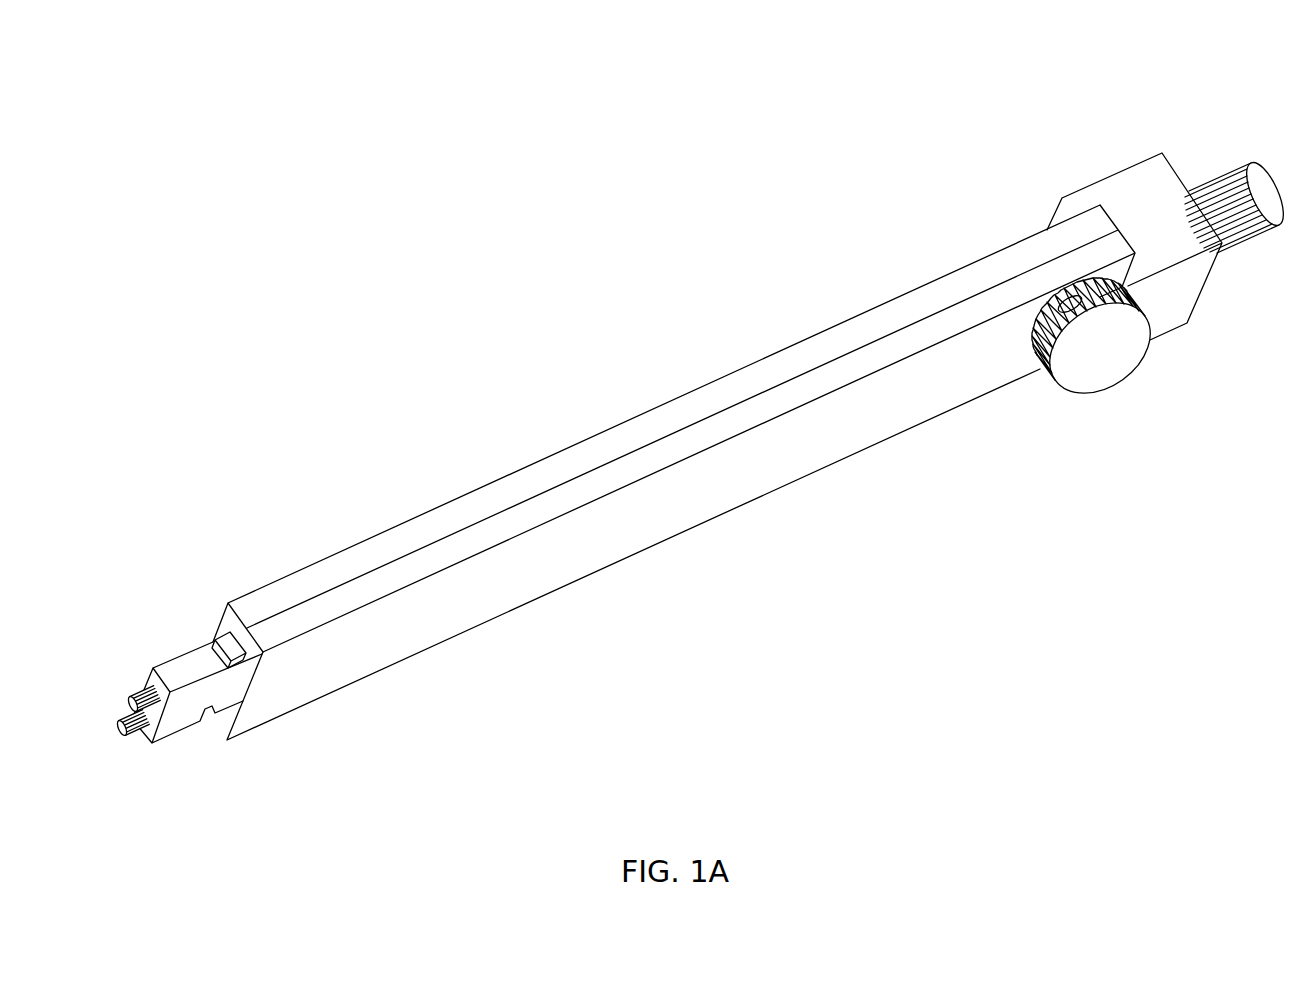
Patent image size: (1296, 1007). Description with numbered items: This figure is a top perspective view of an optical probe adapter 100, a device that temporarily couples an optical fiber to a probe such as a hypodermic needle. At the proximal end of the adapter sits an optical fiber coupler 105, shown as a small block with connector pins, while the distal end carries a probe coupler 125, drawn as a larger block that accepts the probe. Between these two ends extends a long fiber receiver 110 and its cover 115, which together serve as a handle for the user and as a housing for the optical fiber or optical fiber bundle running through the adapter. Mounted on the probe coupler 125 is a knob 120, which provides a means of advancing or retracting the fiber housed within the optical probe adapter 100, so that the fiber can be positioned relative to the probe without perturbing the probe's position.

The optical probe adapter 100 is at (1188, 50).
The optical fiber coupler 105 is at (187, 667).
The fiber receiver 110 is at (462, 508).
The cover 115 is at (635, 532).
The knob 120 is at (1093, 367).
The probe coupler 125 is at (1133, 193).